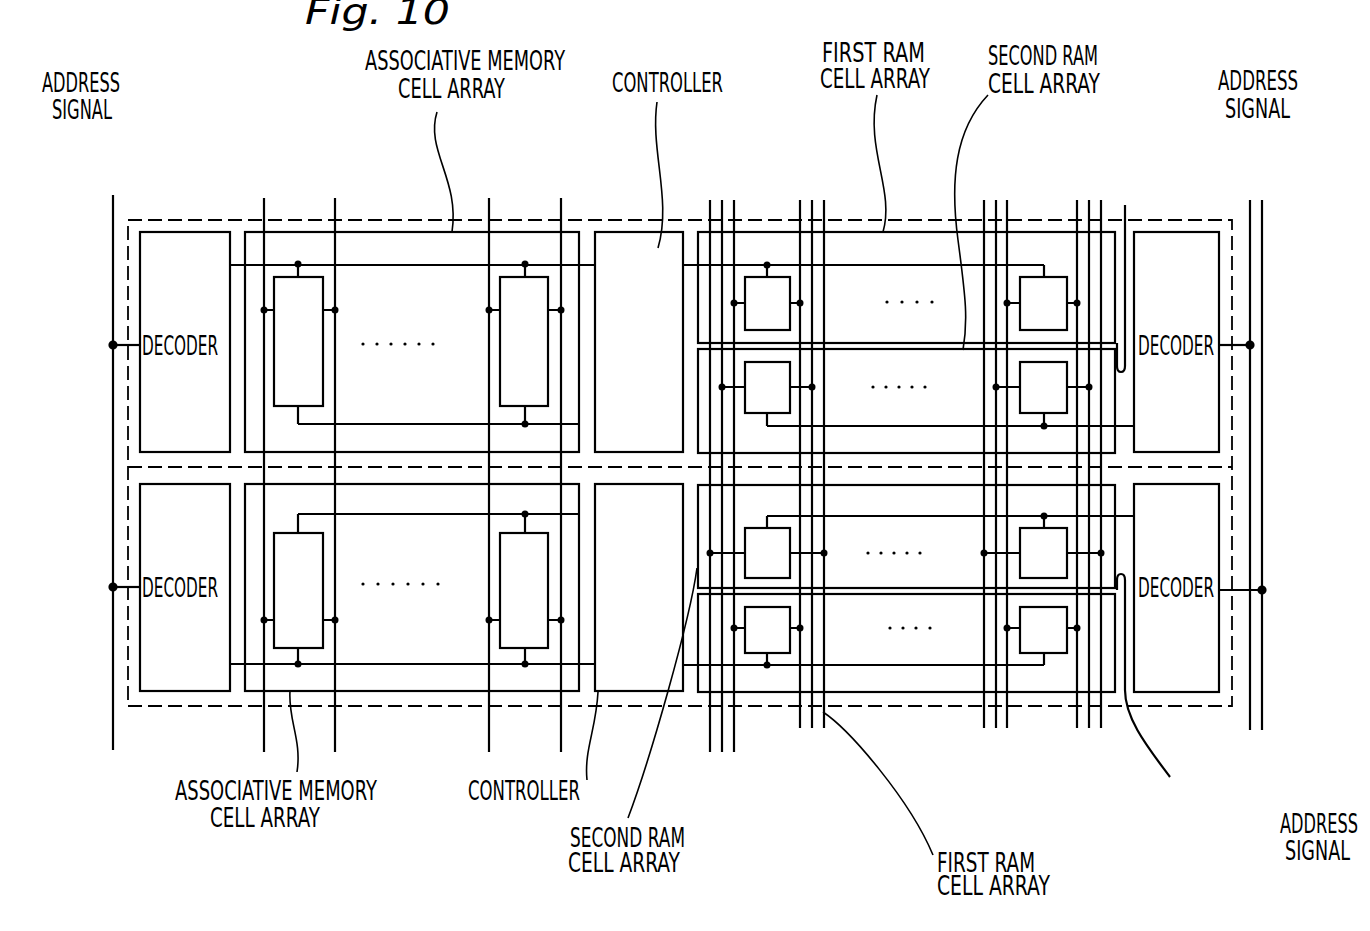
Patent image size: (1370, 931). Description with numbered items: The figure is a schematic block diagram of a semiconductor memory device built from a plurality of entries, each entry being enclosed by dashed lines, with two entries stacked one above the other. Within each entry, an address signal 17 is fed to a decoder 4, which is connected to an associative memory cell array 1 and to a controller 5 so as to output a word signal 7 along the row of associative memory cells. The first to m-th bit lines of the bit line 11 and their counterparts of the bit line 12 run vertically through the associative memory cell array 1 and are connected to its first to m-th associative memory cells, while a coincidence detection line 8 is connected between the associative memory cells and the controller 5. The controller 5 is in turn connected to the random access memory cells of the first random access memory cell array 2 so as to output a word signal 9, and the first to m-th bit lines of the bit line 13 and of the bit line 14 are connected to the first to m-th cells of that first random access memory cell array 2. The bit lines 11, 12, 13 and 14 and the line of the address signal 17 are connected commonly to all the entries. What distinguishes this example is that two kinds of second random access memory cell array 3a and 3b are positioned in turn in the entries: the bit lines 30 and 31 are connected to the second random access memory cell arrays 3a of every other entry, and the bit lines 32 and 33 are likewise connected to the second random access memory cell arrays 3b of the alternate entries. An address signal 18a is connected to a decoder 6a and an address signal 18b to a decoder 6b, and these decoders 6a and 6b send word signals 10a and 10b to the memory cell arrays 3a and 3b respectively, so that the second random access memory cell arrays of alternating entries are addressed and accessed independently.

The associative memory cell array 1 is at (412, 232).
The first random access memory cell array 2 is at (900, 232).
The second random access memory cell array 3a is at (1127, 205).
The second random access memory cell array 3b is at (1167, 691).
The decoder 4 is at (172, 232).
The controller 5 is at (637, 232).
The decoder 6a is at (1172, 232).
The decoder 6b is at (1172, 692).
The word signal 7 is at (405, 265).
The coincidence detection line 8 is at (390, 424).
The word signal 9 is at (840, 265).
The word signal 10a is at (855, 426).
The word signal 10b is at (852, 516).
The bit line 11 is at (508, 152).
The bit line 12 is at (582, 152).
The bit line 13 is at (1010, 205).
The bit line 14 is at (1078, 205).
The address signal 17 is at (113, 218).
The address signal 18a is at (1250, 205).
The address signal 18b is at (1257, 718).
The bit line 30 is at (722, 730).
The bit line 31 is at (812, 730).
The bit line 32 is at (982, 718).
The bit line 33 is at (862, 692).